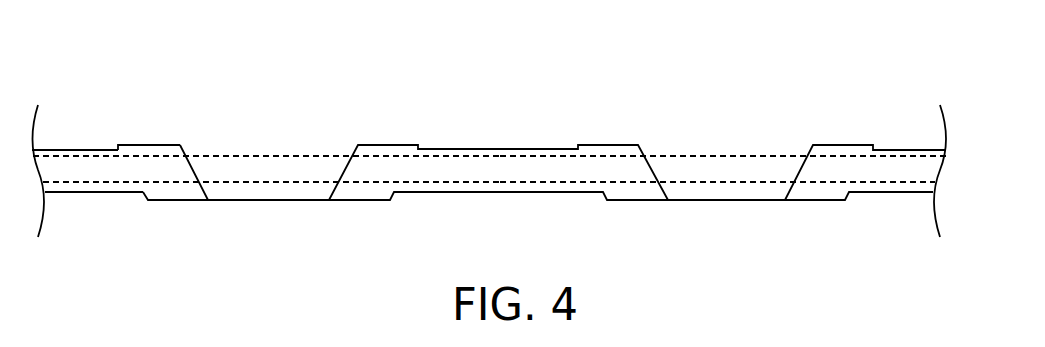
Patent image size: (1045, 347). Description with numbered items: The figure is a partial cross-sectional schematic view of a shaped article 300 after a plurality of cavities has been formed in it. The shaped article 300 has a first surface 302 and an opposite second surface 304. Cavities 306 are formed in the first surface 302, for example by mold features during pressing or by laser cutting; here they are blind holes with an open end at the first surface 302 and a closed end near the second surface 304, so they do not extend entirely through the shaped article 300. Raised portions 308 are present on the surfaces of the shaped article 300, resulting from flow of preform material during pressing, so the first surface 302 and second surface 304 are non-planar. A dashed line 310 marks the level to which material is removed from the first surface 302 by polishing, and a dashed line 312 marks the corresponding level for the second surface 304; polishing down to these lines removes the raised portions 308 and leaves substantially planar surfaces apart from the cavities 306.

The shaped article 300 is at (119, 96).
The first surface 302 is at (488, 148).
The second surface 304 is at (495, 193).
The cavities 306 is at (260, 163).
The raised portions 308 is at (160, 145).
The dashed line 310 is at (715, 150).
The dashed line 312 is at (712, 190).